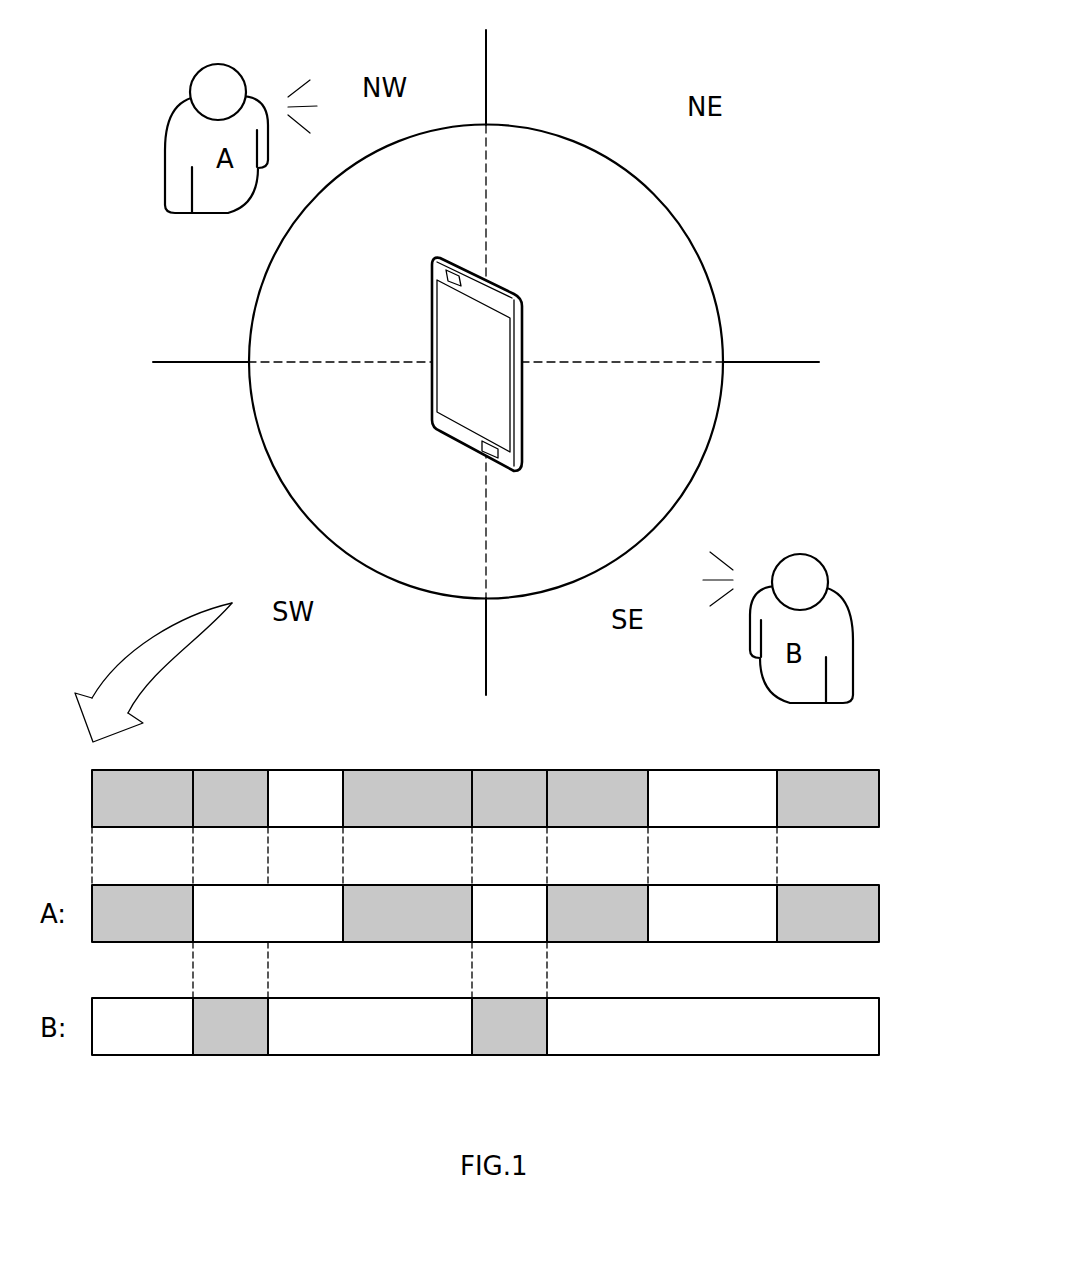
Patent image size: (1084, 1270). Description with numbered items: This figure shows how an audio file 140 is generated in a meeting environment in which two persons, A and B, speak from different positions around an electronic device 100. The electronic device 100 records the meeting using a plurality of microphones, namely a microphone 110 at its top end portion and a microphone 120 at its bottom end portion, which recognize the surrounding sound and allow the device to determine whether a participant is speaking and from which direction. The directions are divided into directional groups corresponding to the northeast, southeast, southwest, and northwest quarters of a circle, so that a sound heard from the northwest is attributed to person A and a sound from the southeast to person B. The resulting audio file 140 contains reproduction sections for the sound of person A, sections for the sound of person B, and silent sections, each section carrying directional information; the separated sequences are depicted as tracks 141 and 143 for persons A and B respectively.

The electronic device 100 is at (522, 300).
The microphone 110 is at (446, 273).
The microphone 120 is at (487, 447).
The audio file 140 is at (880, 798).
The audio signal of speaker A 141 is at (880, 913).
The audio signal of speaker B 143 is at (880, 1027).